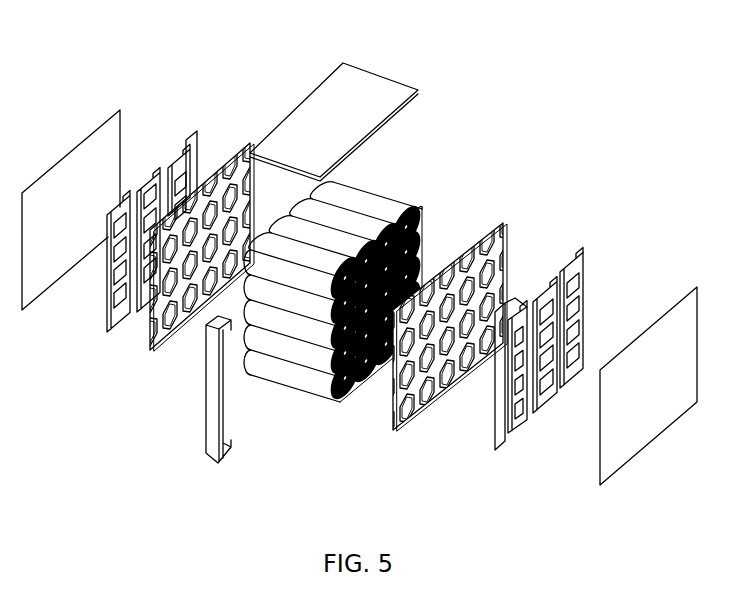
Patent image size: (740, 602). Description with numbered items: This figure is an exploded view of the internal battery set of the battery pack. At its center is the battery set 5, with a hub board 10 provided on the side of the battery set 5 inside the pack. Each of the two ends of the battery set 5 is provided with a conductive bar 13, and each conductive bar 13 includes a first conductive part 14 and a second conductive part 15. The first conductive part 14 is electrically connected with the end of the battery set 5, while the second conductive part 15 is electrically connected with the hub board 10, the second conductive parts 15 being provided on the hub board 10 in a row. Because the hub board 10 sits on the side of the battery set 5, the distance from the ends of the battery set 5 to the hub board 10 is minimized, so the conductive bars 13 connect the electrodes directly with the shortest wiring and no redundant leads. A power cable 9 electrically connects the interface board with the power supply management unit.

The battery set 5 is at (412, 203).
The power cable 9 is at (205, 413).
The hub board 10 is at (362, 70).
The conductive bar 13 is at (588, 297).
The first conductive part 14 is at (574, 378).
The second conductive part 15 is at (577, 257).